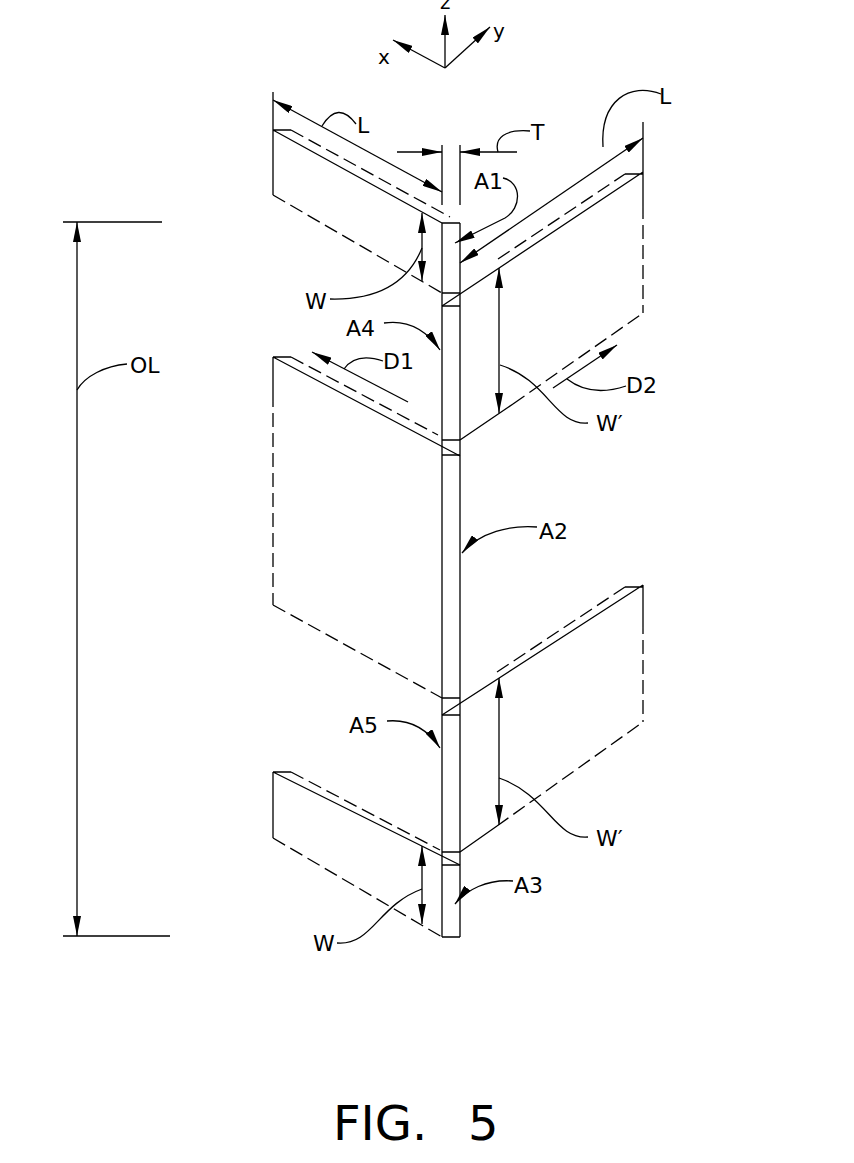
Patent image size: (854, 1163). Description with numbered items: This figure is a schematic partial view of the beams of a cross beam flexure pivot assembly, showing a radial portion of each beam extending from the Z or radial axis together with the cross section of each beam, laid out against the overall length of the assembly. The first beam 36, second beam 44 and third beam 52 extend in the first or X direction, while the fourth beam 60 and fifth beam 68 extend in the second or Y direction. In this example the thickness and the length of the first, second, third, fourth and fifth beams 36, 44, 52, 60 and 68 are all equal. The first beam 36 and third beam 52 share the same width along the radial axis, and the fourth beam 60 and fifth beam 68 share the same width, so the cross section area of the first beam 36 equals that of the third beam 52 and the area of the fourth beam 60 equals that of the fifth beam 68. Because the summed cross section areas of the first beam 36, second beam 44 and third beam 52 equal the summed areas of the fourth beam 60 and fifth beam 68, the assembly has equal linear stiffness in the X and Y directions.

The first beam 36 is at (293, 177).
The second beam 44 is at (318, 483).
The third beam 52 is at (340, 838).
The fourth beam 60 is at (613, 243).
The fifth beam 68 is at (608, 668).